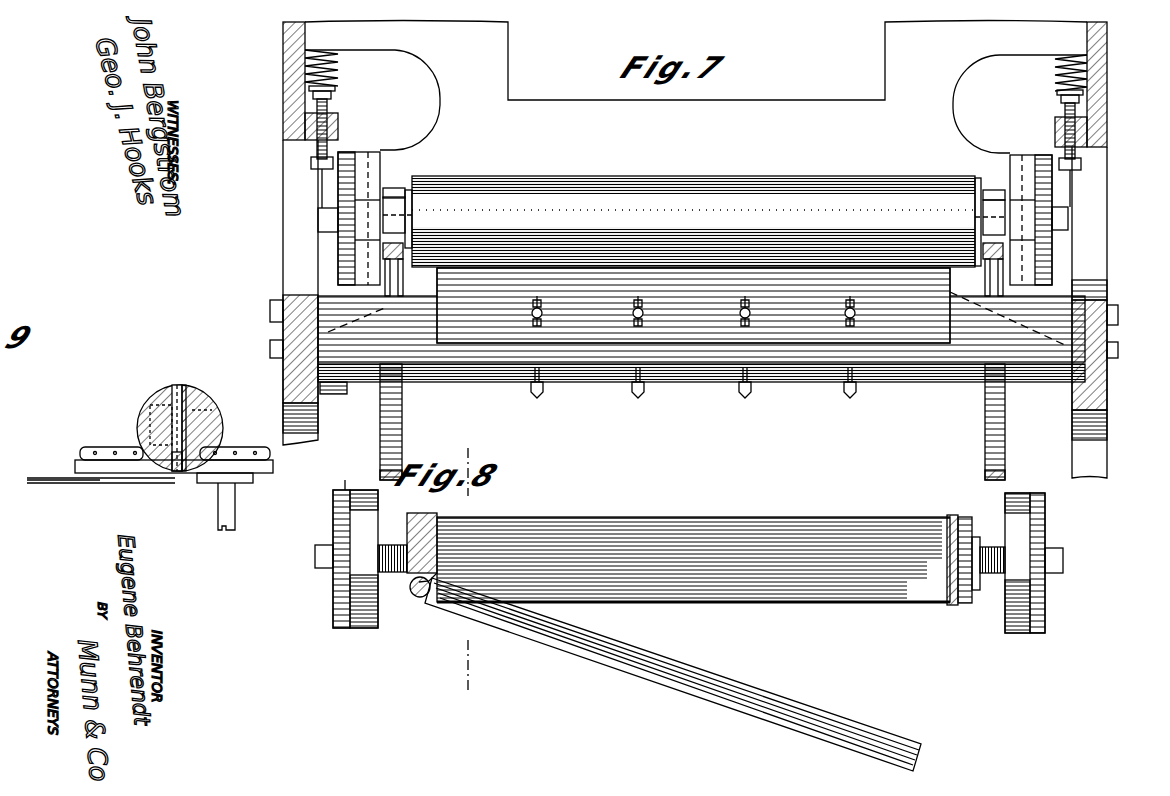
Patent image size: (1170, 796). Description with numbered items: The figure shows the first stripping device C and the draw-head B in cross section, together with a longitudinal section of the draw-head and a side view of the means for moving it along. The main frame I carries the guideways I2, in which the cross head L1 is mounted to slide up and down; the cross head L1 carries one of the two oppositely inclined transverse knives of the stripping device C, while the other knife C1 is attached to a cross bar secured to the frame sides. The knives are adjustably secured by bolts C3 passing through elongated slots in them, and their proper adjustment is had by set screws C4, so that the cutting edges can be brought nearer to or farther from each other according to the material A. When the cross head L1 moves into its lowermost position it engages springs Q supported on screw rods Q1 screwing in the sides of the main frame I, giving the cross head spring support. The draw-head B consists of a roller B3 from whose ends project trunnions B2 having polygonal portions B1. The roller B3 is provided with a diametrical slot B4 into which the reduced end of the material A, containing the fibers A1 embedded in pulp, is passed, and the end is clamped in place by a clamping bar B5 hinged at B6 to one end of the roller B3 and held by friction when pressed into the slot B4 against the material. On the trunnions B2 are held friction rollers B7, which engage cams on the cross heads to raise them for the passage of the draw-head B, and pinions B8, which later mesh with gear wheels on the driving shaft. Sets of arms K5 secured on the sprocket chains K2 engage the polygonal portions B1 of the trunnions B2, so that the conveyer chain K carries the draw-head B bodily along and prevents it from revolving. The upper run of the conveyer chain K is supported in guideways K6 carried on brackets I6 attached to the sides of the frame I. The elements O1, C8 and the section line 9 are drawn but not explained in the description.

In FIG. 7, the main frame I is at (685, 264).
In FIG. 7, the guideways I2 is at (283, 40).
In FIG. 9, the brackets I6 is at (227, 502).
In FIG. 7, the cross head L1 is at (582, 112).
In FIG. 7, the springs Q is at (338, 72).
In FIG. 7, the screw rods Q1 is at (330, 106).
In FIG. 7, the adjusting screw O1 is at (1063, 113).
In FIG. 7, the draw-head B is at (693, 207).
In FIG. 8, the draw-head B is at (693, 544).
In FIG. 9, the draw-head B is at (167, 425).
In FIG. 7, the polygonal portions B1 is at (405, 215).
In FIG. 8, the polygonal portions B1 is at (396, 545).
In FIG. 7, the trunnions B2 is at (318, 216).
In FIG. 8, the trunnions B2 is at (323, 548).
In FIG. 7, the roller B3 is at (705, 218).
In FIG. 8, the roller B3 is at (712, 518).
In FIG. 9, the roller B3 is at (190, 392).
In FIG. 8, the diametrical slot B4 is at (698, 604).
In FIG. 9, the diametrical slot B4 is at (177, 386).
In FIG. 8, the clamping bar B5 is at (793, 703).
In FIG. 9, the clamping bar B5 is at (176, 474).
In FIG. 8, the hinge B6 is at (422, 596).
In FIG. 7, the friction rollers B7 is at (376, 152).
In FIG. 8, the friction rollers B7 is at (362, 628).
In FIG. 7, the pinions B8 is at (340, 250).
In FIG. 8, the pinions B8 is at (345, 490).
In FIG. 7, the conveyer chain K is at (995, 210).
In FIG. 7, the sprocket chains K2 is at (405, 246).
In FIG. 7, the arms K5 is at (394, 203).
In FIG. 9, the arms K5 is at (148, 430).
In FIG. 7, the guideways K6 is at (403, 262).
In FIG. 9, the guideways K6 is at (268, 473).
In FIG. 7, the first stripping device C is at (405, 312).
In FIG. 7, the knife C1 is at (614, 312).
In FIG. 7, the bolts C3 is at (645, 316).
In FIG. 7, the bolt C8 is at (530, 316).
In FIG. 7, the set screws C4 is at (632, 394).
In FIG. 9, the material A is at (80, 484).
In FIG. 9, the fibers A1 is at (196, 411).
In FIG. 8, the section line 9 is at (467, 569).